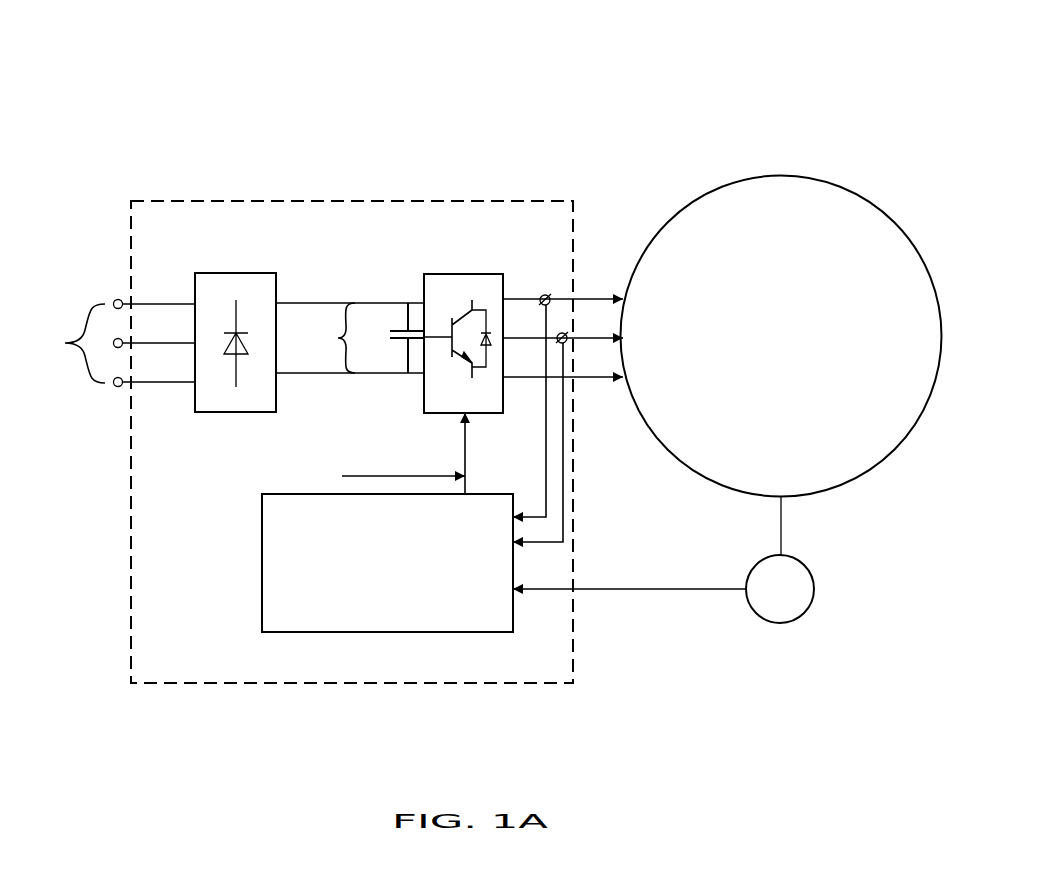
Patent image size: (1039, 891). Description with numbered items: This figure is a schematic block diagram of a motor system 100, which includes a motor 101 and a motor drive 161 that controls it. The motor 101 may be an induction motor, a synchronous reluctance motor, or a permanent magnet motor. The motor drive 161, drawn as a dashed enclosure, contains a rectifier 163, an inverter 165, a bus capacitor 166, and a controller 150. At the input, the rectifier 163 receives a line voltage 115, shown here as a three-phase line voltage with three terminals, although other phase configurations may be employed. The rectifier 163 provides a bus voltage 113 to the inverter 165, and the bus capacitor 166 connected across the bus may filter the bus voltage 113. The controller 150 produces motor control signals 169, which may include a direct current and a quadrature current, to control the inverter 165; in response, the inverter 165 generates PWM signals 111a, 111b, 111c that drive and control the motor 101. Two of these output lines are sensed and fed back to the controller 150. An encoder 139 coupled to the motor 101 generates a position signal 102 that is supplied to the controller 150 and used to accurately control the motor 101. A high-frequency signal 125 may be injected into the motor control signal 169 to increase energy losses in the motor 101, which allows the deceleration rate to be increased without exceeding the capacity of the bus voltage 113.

The motor system 100 is at (100, 83).
The motor drive 161 is at (292, 201).
The line voltage 115 is at (109, 343).
The rectifier 163 is at (221, 273).
The bus voltage 113 is at (350, 338).
The bus capacitor 166 is at (408, 352).
The inverter 165 is at (462, 274).
The PWM signal 111a is at (533, 294).
The PWM signal 111b is at (590, 296).
The PWM signal 111c is at (587, 380).
The motor 101 is at (781, 336).
The controller 150 is at (387, 563).
The motor control signals 169 is at (467, 462).
The high-frequency signal 125 is at (413, 475).
The encoder 139 is at (780, 560).
The position signal 102 is at (657, 589).